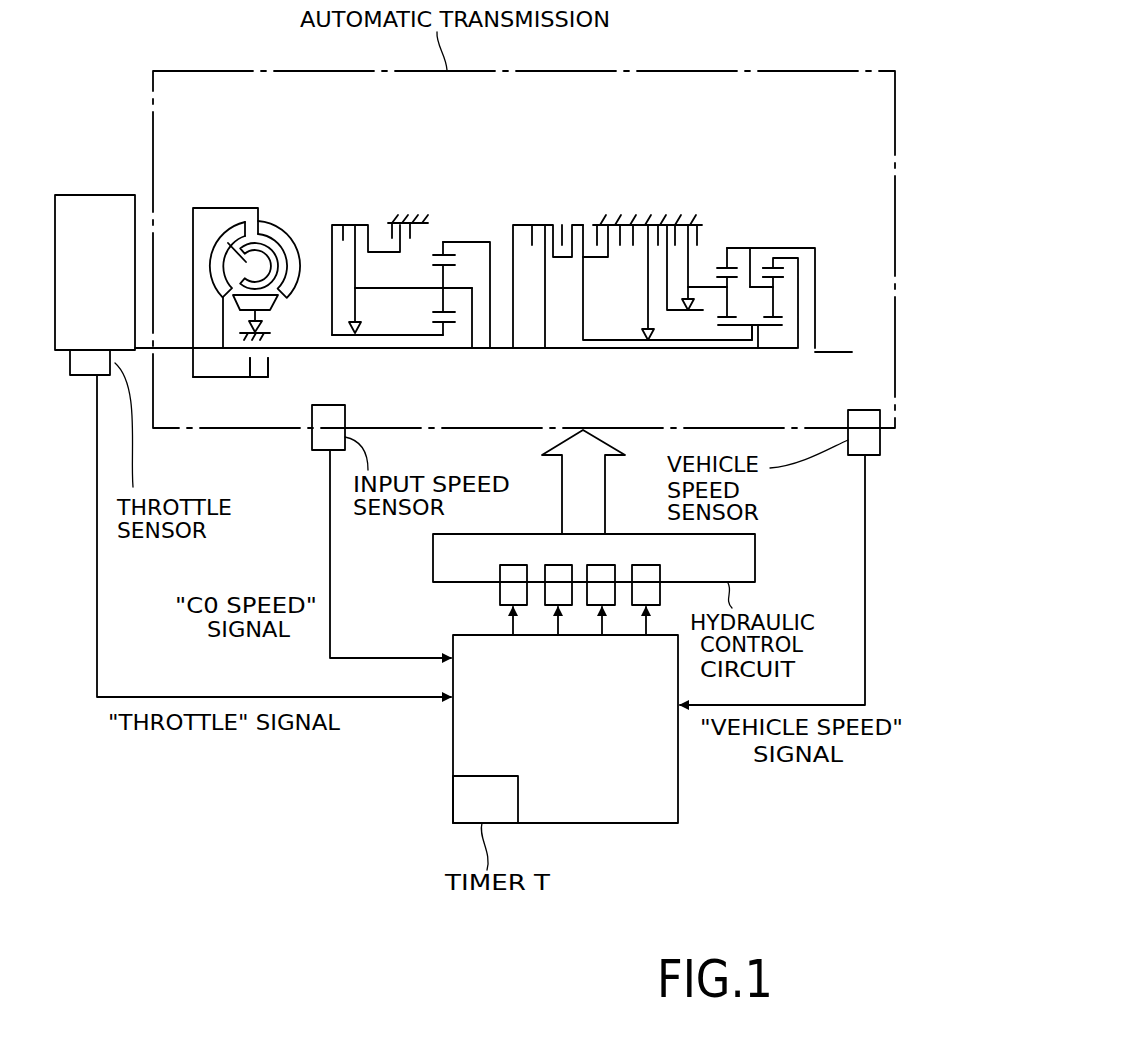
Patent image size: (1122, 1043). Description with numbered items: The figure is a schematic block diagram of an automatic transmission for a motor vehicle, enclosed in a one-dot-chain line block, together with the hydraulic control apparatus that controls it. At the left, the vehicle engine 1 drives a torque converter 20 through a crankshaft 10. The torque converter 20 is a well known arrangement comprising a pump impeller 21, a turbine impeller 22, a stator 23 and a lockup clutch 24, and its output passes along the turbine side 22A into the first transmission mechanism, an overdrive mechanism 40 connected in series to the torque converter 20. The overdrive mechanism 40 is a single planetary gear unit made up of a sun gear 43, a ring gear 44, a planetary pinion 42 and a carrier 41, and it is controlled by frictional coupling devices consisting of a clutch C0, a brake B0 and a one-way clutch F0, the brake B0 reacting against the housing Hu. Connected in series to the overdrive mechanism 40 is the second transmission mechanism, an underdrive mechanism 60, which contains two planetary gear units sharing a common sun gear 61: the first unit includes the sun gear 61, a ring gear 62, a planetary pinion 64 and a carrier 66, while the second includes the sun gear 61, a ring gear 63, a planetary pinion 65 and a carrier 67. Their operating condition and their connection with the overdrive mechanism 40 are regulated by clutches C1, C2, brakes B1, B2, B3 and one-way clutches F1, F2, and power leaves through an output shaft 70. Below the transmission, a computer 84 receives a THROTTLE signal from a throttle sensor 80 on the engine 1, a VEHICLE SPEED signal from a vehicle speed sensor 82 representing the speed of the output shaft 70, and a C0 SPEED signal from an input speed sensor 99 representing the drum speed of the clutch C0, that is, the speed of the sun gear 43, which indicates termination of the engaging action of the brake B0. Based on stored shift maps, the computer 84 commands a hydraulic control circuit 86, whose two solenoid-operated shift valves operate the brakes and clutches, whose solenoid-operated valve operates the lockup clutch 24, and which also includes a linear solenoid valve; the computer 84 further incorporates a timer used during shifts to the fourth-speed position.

The vehicle engine 1 is at (97, 195).
The crankshaft 10 is at (172, 352).
The torque converter 20 is at (254, 241).
The pump impeller 21 is at (281, 232).
The turbine impeller 22 is at (253, 266).
The turbine shaft 22A is at (302, 352).
The stator 23 is at (270, 307).
The lockup clutch 24 is at (222, 378).
The overdrive mechanism 40 is at (472, 251).
The carrier 41 is at (461, 287).
The planetary pinion 42 is at (432, 273).
The sun gear 43 is at (446, 334).
The ring gear 44 is at (443, 252).
The underdrive mechanism 60 is at (686, 244).
The sun gear 61 is at (762, 336).
The ring gear 62 is at (766, 264).
The ring gear 63 is at (718, 265).
The planetary pinion 64 is at (768, 290).
The planetary pinion 65 is at (732, 327).
The carrier 66 is at (758, 292).
The carrier 67 is at (700, 286).
The output shaft 70 is at (830, 353).
The throttle sensor 80 is at (75, 377).
The vehicle speed sensor 82 is at (870, 456).
The computer 84 is at (641, 823).
The hydraulic control circuit 86 is at (433, 560).
The input speed sensor 99 is at (312, 442).
The clutch C0 is at (346, 225).
The clutch C1 is at (540, 224).
The clutch C2 is at (568, 225).
The brake B0 is at (430, 228).
The brake B1 is at (620, 227).
The brake B2 is at (656, 227).
The brake B3 is at (700, 245).
The one-way clutch F0 is at (358, 330).
The one-way clutch F1 is at (640, 333).
The one-way clutch F2 is at (696, 316).
The transmission housing Hu is at (394, 216).